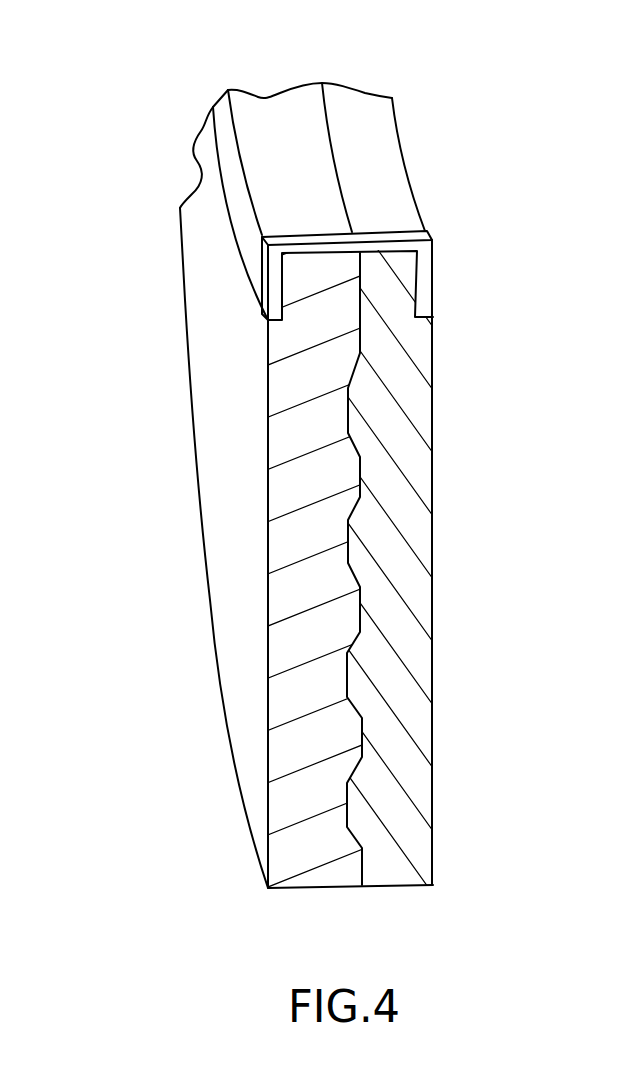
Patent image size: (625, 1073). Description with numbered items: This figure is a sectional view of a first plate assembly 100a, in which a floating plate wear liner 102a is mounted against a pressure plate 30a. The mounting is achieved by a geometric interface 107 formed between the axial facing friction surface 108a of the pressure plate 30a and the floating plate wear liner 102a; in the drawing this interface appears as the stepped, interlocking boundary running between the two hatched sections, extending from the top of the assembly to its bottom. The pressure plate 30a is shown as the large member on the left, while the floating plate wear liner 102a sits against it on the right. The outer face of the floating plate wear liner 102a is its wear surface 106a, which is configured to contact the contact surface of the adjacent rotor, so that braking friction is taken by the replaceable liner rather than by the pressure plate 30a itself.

The first plate assembly 100a is at (104, 107).
The pressure plate 30a is at (218, 525).
The wear surface 106a is at (433, 367).
The floating plate wear liner 102a is at (447, 551).
The geometric interface 107 is at (344, 803).
The axial facing friction surface 108a is at (361, 735).